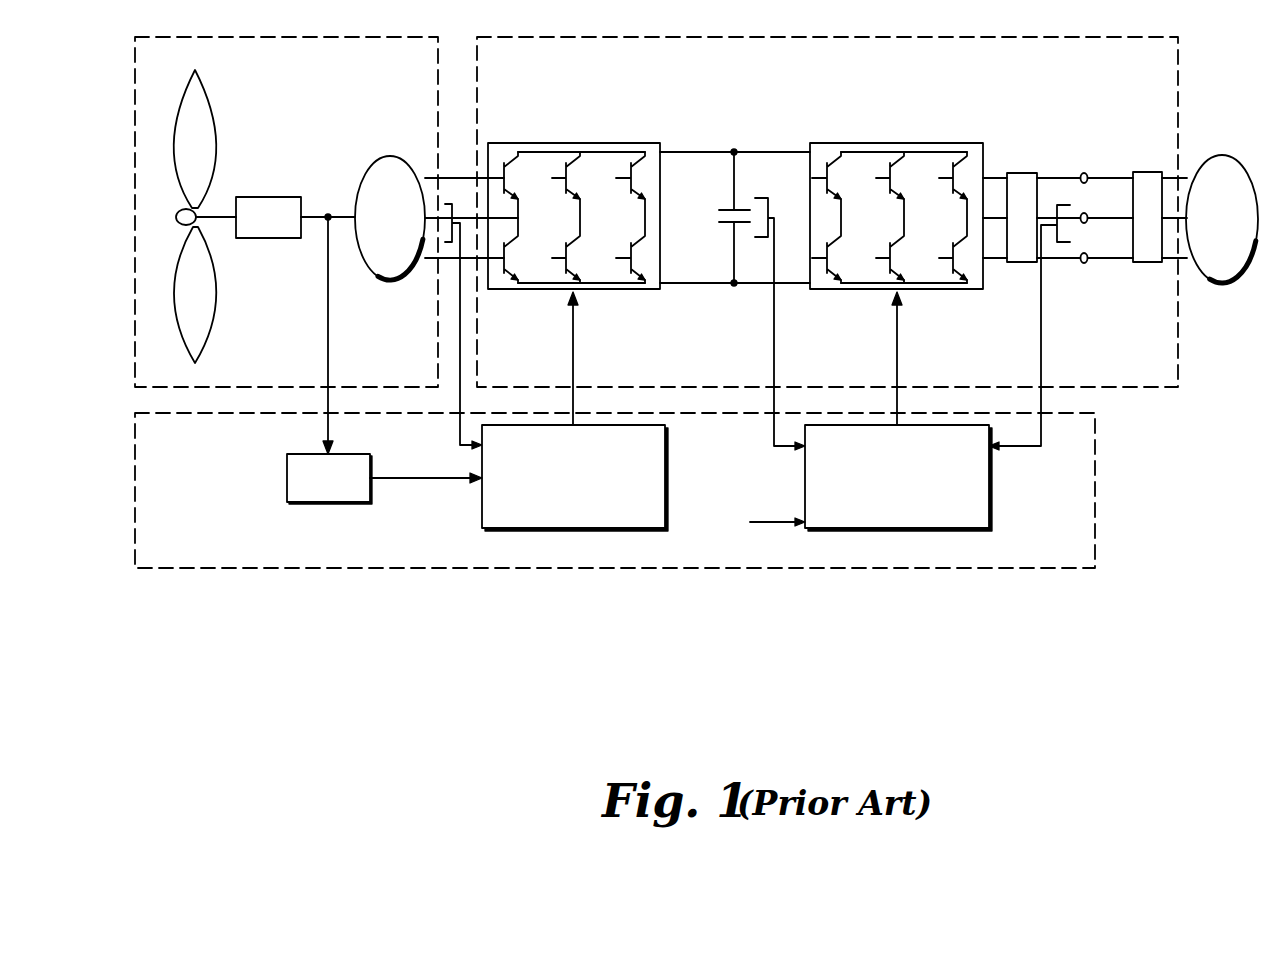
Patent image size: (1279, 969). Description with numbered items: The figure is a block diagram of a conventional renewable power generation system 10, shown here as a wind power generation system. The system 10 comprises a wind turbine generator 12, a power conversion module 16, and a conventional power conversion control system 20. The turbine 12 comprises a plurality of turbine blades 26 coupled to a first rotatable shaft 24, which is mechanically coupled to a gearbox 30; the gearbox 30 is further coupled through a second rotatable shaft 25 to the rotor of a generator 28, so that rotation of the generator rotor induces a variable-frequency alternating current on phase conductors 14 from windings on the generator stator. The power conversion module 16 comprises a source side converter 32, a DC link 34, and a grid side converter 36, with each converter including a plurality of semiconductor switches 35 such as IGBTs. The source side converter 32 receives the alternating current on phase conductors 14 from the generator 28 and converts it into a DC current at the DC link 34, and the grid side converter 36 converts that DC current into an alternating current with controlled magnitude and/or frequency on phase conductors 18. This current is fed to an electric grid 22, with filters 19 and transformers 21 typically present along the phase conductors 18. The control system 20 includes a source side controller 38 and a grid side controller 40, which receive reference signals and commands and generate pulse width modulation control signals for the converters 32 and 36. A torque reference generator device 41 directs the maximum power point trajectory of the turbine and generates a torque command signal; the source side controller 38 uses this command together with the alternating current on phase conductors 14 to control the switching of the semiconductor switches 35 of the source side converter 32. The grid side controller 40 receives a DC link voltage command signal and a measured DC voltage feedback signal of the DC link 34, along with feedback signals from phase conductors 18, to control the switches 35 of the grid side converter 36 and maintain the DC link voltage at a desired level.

The renewable power generation system 10 is at (1122, 633).
The wind turbine generator 12 is at (135, 48).
The phase conductors 14 is at (463, 178).
The power conversion module 16 is at (477, 37).
The phase conductors 18 is at (997, 174).
The filters 19 is at (1025, 263).
The power conversion control system 20 is at (1095, 492).
The transformers 21 is at (1153, 263).
The electric grid 22 is at (1222, 156).
The first rotatable shaft 24 is at (218, 217).
The second rotatable shaft 25 is at (340, 214).
The turbine blades 26 is at (178, 100).
The generator 28 is at (382, 158).
The gearbox 30 is at (273, 222).
The source side converter 32 is at (633, 143).
The DC link 34 is at (735, 150).
The semiconductor switches 35 is at (509, 167).
The grid side converter 36 is at (942, 150).
The source side controller 38 is at (668, 452).
The grid side controller 40 is at (992, 508).
The torque reference generator device 41 is at (287, 470).